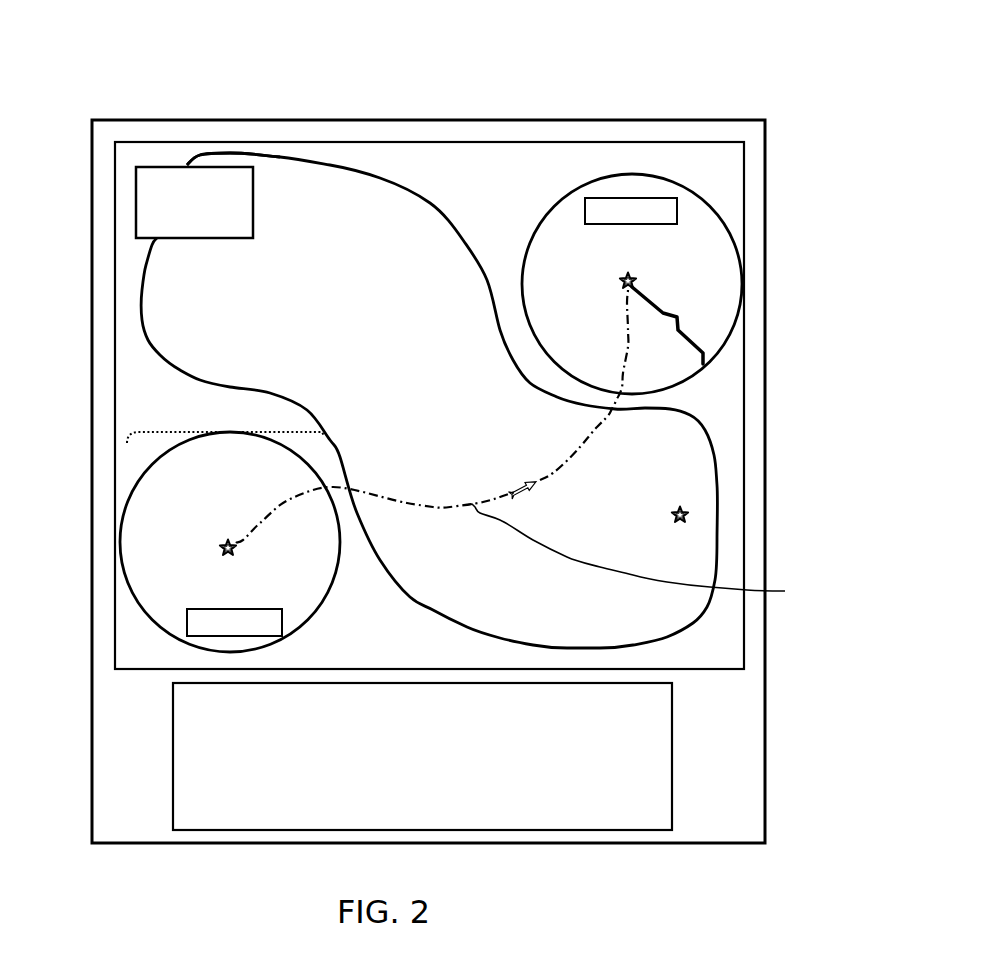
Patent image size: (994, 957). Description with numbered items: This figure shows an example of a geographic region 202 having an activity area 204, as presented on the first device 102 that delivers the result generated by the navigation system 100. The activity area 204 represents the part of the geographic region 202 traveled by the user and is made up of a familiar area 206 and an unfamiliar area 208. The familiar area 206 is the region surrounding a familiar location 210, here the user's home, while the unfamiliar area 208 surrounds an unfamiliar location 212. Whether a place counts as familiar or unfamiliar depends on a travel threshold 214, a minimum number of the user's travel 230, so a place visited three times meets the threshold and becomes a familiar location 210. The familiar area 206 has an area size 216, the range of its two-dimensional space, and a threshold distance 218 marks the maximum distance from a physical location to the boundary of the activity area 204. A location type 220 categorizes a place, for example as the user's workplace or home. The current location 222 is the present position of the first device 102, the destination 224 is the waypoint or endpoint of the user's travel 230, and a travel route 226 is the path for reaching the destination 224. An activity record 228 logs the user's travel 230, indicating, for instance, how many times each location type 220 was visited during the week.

The navigation system 100 is at (164, 44).
The first device 102 is at (697, 120).
The geographic region 202 is at (575, 168).
The activity area 204 is at (727, 201).
The familiar area 206 is at (158, 513).
The unfamiliar area 208 is at (160, 338).
The familiar location 210 is at (222, 548).
The unfamiliar location 212 is at (682, 505).
The travel threshold 214 is at (155, 183).
The area size 216 is at (227, 432).
The threshold distance 218 is at (676, 313).
The location type 220 is at (660, 198).
The current location 222 is at (540, 484).
The destination 224 is at (631, 276).
The travel route 226 is at (653, 552).
The activity record 228 is at (673, 747).
The user's travel 230 is at (300, 800).